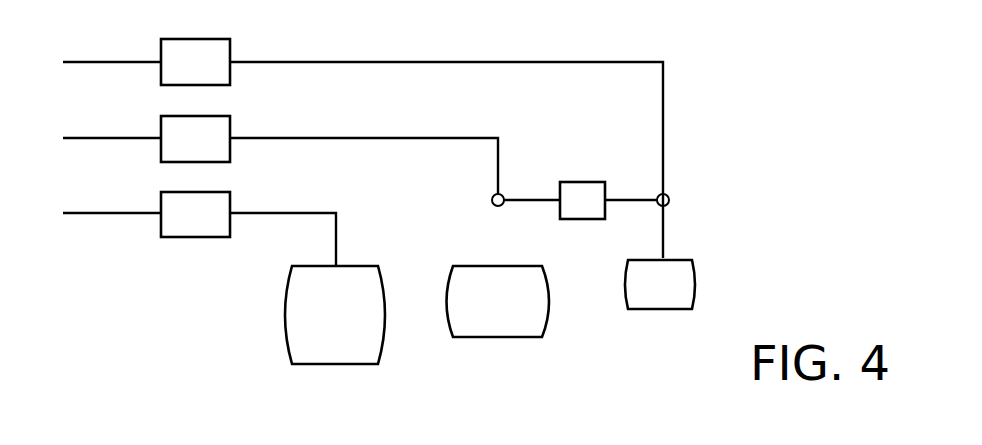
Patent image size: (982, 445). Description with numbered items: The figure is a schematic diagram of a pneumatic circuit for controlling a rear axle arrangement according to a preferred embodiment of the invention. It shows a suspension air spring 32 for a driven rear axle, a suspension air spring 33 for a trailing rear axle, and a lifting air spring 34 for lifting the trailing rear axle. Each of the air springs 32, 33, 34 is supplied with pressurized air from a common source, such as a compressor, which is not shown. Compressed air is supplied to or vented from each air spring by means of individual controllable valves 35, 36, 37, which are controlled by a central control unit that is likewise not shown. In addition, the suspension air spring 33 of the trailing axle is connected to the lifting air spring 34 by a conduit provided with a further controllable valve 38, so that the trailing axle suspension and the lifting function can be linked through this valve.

The suspension air spring 32 is at (292, 333).
The suspension air spring 33 is at (535, 310).
The lifting air spring 34 is at (693, 287).
The controllable valve 35 is at (178, 238).
The controllable valve 36 is at (177, 162).
The controllable valve 37 is at (177, 85).
The further controllable valve 38 is at (603, 187).